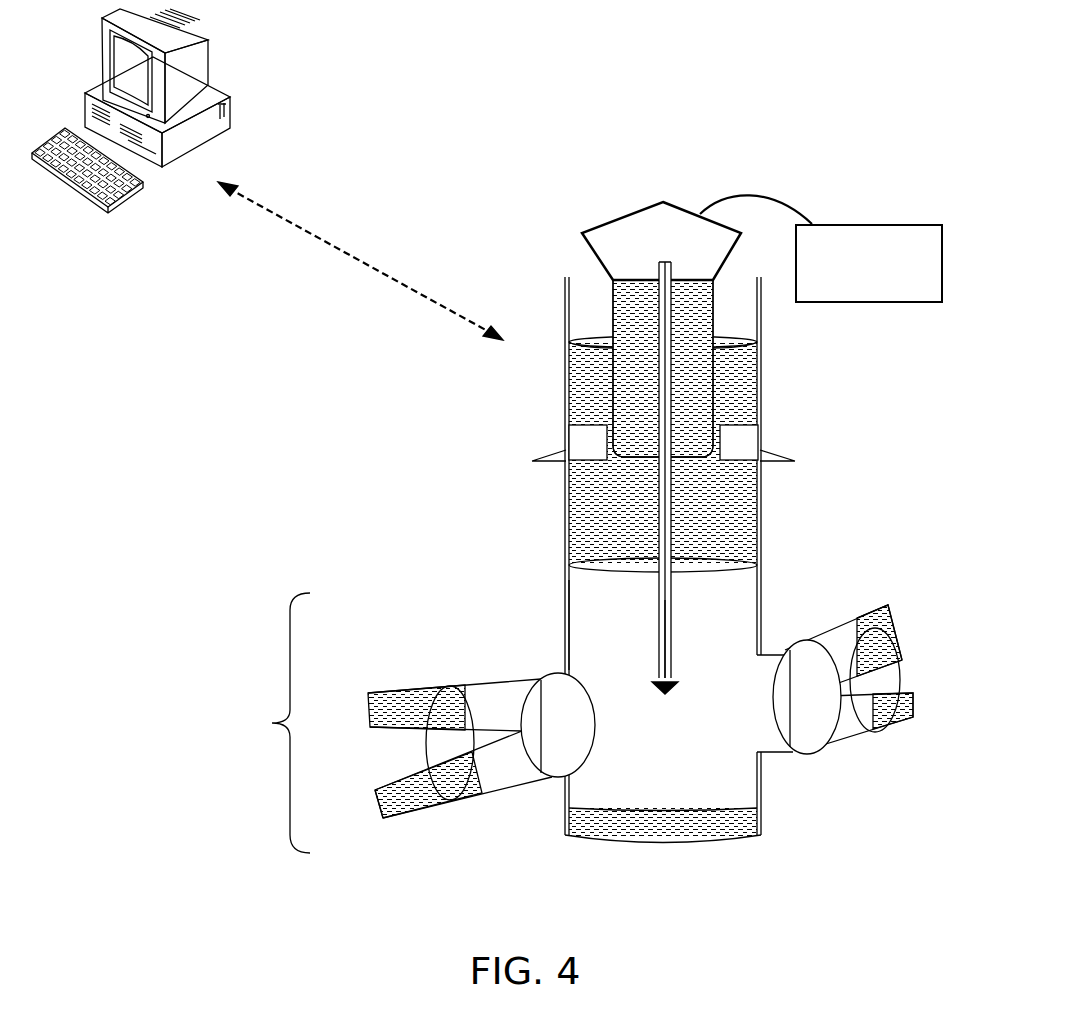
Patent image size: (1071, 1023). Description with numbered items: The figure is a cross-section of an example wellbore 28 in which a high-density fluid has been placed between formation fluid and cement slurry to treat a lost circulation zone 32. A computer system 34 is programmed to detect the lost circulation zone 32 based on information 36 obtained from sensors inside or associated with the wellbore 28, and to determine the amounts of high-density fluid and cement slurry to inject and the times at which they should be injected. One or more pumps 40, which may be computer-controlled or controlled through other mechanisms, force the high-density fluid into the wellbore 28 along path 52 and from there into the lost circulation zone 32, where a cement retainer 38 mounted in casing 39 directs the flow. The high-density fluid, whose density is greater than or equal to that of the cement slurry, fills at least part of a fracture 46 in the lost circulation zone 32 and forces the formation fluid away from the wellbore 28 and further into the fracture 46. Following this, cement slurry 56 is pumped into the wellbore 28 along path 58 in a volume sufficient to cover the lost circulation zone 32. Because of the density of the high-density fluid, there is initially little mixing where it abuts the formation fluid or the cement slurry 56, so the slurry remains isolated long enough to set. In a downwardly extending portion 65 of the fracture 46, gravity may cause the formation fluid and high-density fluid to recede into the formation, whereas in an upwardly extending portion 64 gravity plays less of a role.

The wellbore 28 is at (748, 520).
The lost circulation zone 32 is at (429, 729).
The computer system 34 is at (213, 137).
The information 36 is at (323, 243).
The cement retainer 38 is at (752, 443).
The casing 39 is at (760, 343).
The one or more pumps 40 is at (903, 302).
The fracture 46 is at (400, 807).
The path 52 is at (660, 613).
The cement slurry 56 is at (585, 652).
The path 58 is at (672, 630).
The portion 64 is at (893, 650).
The portion 65 is at (377, 802).